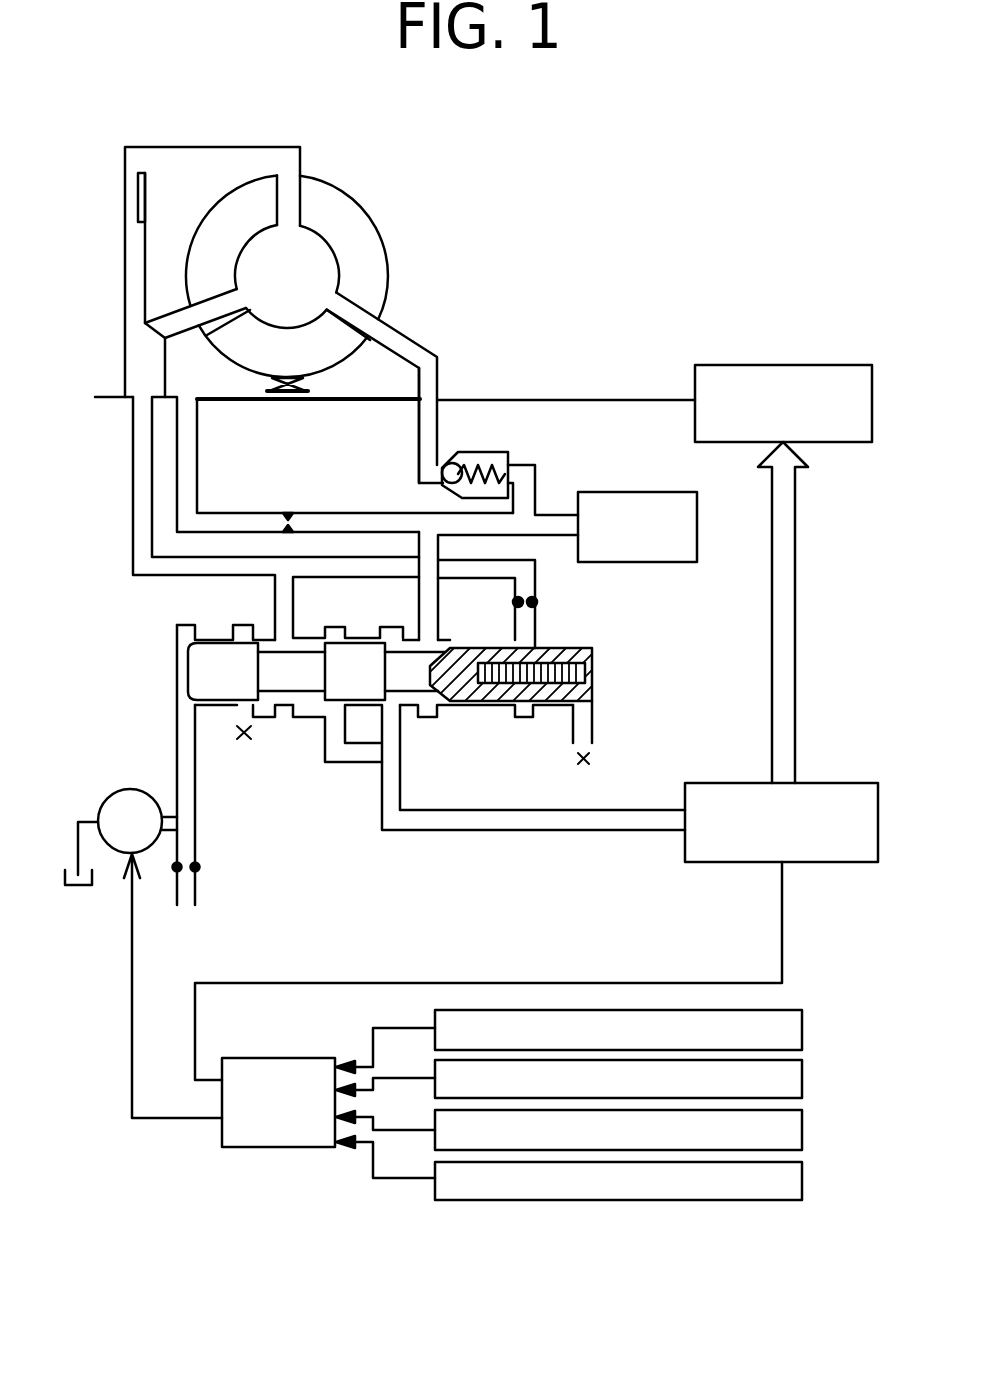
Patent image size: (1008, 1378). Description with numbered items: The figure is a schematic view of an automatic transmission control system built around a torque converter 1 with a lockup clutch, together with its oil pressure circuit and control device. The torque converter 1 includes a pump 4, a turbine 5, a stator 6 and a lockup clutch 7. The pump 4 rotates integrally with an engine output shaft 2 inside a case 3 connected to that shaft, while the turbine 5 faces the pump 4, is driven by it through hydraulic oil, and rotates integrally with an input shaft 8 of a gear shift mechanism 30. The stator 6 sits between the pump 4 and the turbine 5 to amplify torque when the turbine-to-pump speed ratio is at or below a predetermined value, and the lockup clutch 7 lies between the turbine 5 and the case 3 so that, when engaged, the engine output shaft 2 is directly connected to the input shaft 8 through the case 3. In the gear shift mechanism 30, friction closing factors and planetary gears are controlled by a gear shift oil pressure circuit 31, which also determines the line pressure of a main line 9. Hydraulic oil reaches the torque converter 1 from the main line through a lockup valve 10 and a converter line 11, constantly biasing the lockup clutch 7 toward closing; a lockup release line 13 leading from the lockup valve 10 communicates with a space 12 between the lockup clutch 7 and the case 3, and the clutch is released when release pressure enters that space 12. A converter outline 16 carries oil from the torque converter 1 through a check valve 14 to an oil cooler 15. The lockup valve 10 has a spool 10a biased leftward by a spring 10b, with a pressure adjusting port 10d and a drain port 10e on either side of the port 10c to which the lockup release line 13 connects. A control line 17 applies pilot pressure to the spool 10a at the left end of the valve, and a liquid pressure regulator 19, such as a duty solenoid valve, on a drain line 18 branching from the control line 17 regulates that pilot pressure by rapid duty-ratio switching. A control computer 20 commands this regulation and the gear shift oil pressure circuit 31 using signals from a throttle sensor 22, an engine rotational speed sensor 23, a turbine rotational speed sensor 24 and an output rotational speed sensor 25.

The torque converter 1 is at (366, 176).
The engine output shaft 2 is at (121, 398).
The case 3 is at (125, 351).
The pump 4 is at (369, 236).
The turbine 5 is at (241, 200).
The stator 6 is at (347, 330).
The lockup clutch 7 is at (147, 196).
The input shaft 8 is at (177, 398).
The main line 9 is at (393, 788).
The lockup valve 10 is at (417, 653).
The spool 10a is at (218, 656).
The spring 10b is at (593, 673).
The port 10c is at (318, 597).
The pressure adjusting port 10d is at (337, 727).
The drain port 10e is at (237, 713).
The converter line 11 is at (190, 435).
The space 12 is at (139, 247).
The lockup release line 13 is at (136, 480).
The check valve 14 is at (484, 459).
The oil cooler 15 is at (636, 492).
The converter outline 16 is at (421, 437).
The control line 17 is at (190, 892).
The drain line 18 is at (170, 816).
The liquid pressure regulator 19 is at (114, 811).
The control computer 20 is at (288, 1058).
The throttle sensor 22 is at (802, 1030).
The engine rotational speed sensor 23 is at (802, 1080).
The turbine rotational speed sensor 24 is at (802, 1131).
The output rotational speed sensor 25 is at (802, 1182).
The gear shift mechanism 30 is at (807, 372).
The gear shift oil pressure circuit 31 is at (817, 790).